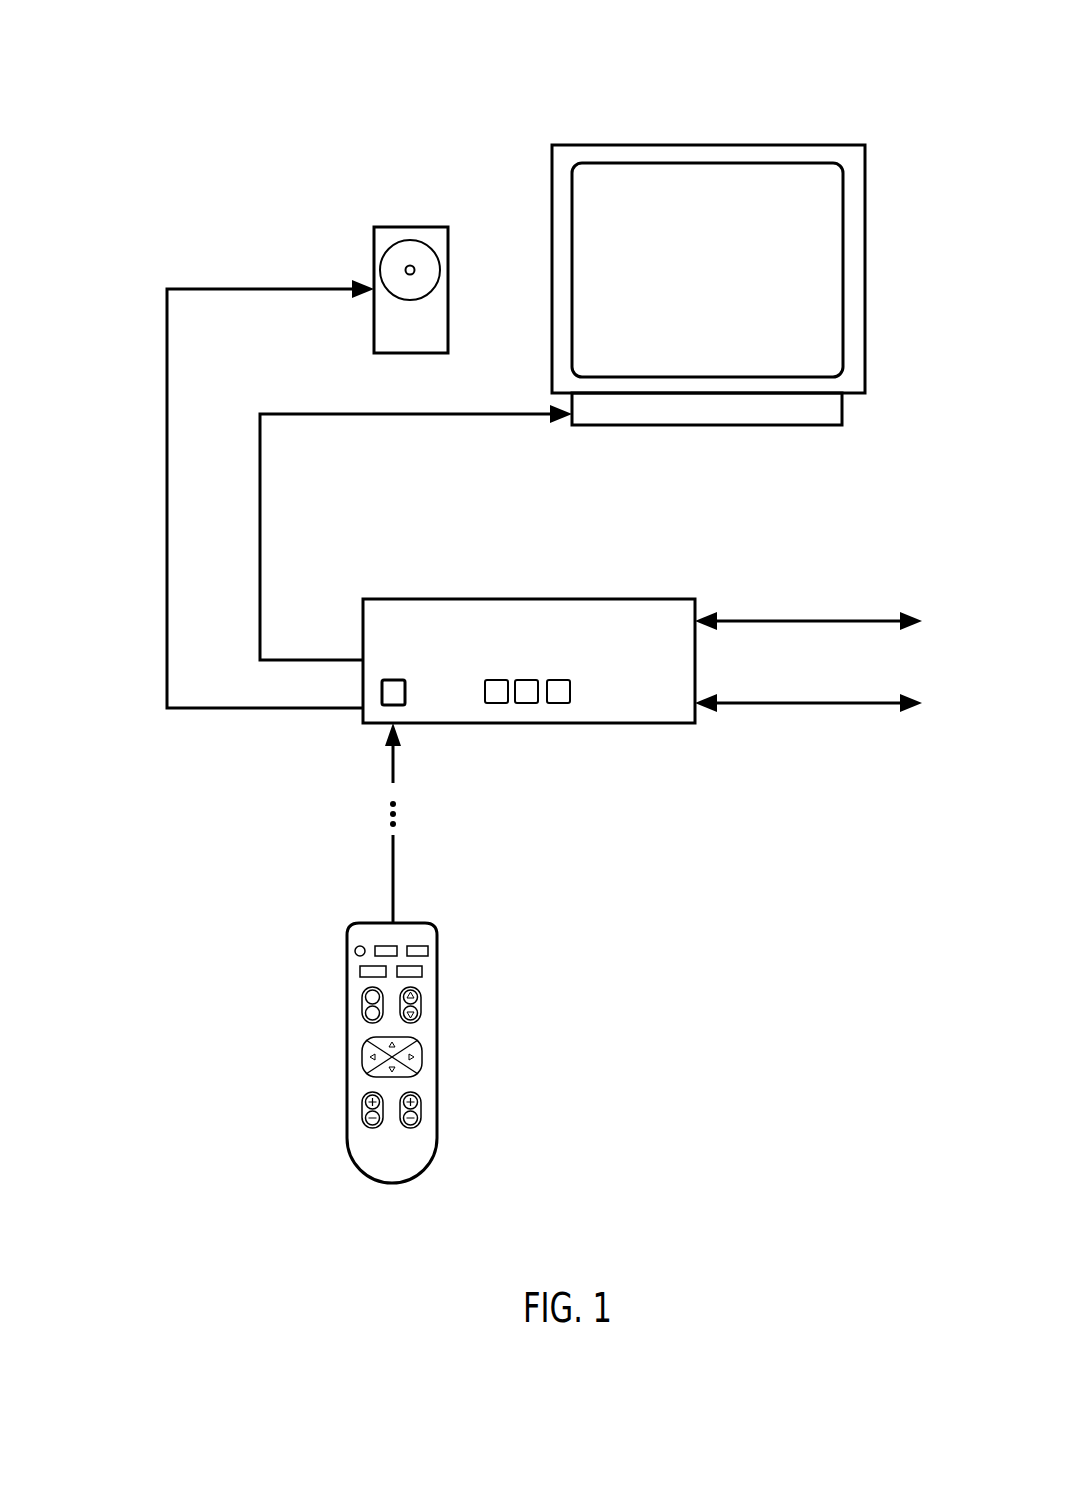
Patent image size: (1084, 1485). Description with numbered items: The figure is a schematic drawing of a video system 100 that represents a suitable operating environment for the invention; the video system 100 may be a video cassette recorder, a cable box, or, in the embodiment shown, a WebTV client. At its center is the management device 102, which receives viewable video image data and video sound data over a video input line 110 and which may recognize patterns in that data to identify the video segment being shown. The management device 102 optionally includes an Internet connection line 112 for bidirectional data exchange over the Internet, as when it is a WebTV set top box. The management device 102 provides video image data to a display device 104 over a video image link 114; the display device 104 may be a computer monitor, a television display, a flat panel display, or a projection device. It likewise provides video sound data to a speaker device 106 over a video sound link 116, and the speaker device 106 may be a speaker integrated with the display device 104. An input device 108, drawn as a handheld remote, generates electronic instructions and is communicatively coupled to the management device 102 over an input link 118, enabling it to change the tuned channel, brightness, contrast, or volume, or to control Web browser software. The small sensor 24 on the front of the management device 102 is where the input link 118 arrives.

The video system 100 is at (842, 96).
The management device 102 is at (686, 713).
The display device 104 is at (833, 359).
The speaker device 106 is at (427, 341).
The input device 108 is at (408, 1172).
The video input line 110 is at (748, 620).
The Internet connection line 112 is at (748, 702).
The video image link 114 is at (260, 513).
The video sound link 116 is at (167, 463).
The input link 118 is at (391, 880).
The IR sensor 24 is at (405, 690).